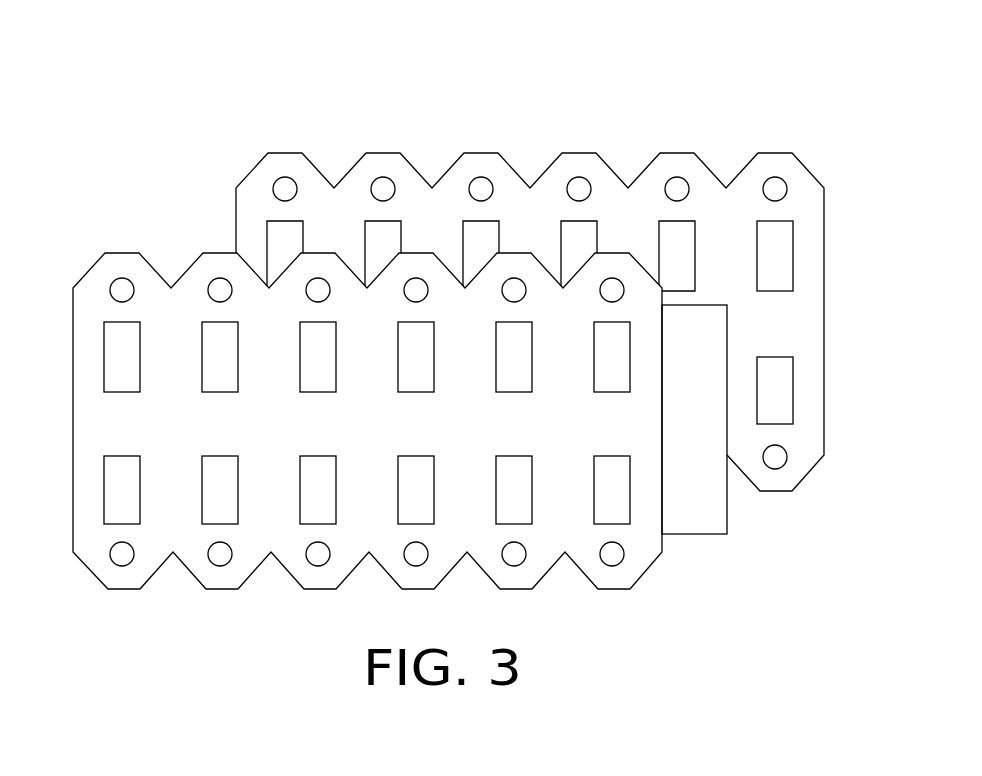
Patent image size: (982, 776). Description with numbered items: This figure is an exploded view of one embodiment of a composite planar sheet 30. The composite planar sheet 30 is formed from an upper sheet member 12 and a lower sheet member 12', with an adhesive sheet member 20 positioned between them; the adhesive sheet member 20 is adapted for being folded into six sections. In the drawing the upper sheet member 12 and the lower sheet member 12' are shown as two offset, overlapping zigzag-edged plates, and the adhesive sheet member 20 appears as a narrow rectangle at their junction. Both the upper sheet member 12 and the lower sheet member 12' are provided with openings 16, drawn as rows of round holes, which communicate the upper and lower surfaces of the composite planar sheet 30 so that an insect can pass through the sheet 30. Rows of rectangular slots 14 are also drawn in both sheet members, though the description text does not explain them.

The upper sheet member 12 is at (345, 421).
The lower sheet member 12' is at (574, 322).
The rectangular slots 14 is at (413, 372).
The openings 16 is at (119, 283).
The adhesive sheet member 20 is at (710, 513).
The composite planar sheet 30 is at (729, 82).